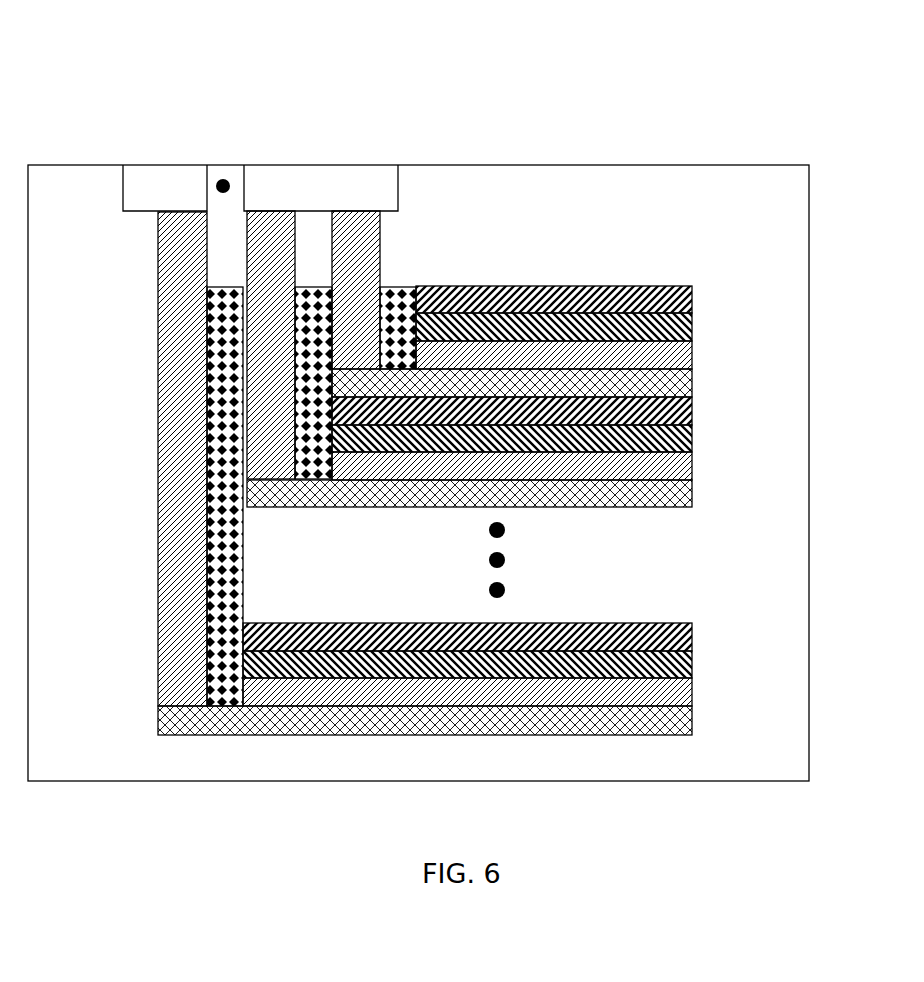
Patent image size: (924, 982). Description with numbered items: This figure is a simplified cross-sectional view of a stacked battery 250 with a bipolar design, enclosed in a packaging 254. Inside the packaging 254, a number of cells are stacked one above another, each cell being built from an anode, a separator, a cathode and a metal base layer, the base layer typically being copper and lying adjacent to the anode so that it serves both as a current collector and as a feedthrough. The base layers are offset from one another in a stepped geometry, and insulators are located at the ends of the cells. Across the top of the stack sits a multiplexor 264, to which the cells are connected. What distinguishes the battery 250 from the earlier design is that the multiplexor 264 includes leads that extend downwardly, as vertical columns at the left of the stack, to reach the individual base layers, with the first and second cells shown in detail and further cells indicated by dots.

The battery 250 is at (800, 88).
The packaging 254 is at (800, 165).
The multiplexor 264 is at (400, 182).